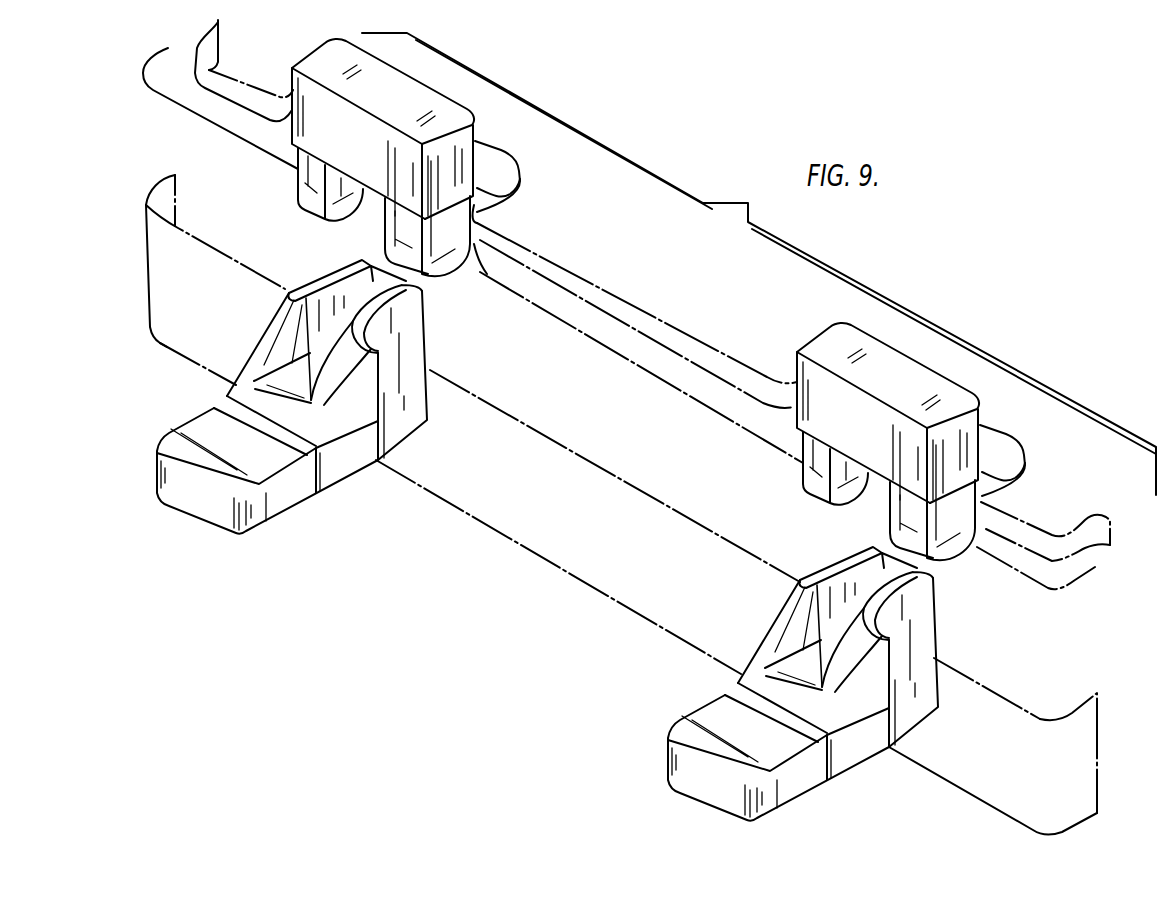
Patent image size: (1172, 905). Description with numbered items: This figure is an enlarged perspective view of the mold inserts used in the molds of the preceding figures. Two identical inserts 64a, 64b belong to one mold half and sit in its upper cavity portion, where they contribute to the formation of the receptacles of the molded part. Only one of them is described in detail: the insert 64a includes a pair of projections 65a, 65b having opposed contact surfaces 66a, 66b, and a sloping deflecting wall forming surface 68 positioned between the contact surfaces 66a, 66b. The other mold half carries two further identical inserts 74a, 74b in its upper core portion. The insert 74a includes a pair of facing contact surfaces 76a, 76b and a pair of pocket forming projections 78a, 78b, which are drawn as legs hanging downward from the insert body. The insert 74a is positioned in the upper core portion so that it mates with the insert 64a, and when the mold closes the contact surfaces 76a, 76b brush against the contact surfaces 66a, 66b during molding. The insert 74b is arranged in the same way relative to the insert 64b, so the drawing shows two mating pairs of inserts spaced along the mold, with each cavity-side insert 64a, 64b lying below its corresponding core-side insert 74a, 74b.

The insert 64a is at (338, 422).
The insert 64b is at (694, 818).
The projection 65a is at (445, 327).
The projection 65b is at (325, 266).
The contact surface 66a is at (412, 344).
The contact surface 66b is at (309, 276).
The sloping deflecting wall forming surface 68 is at (395, 276).
The insert 74a is at (426, 157).
The insert 74b is at (929, 352).
The contact surface 76a is at (341, 188).
The contact surface 76b is at (477, 223).
The pocket forming projection 78a is at (378, 217).
The pocket forming projection 78b is at (487, 274).